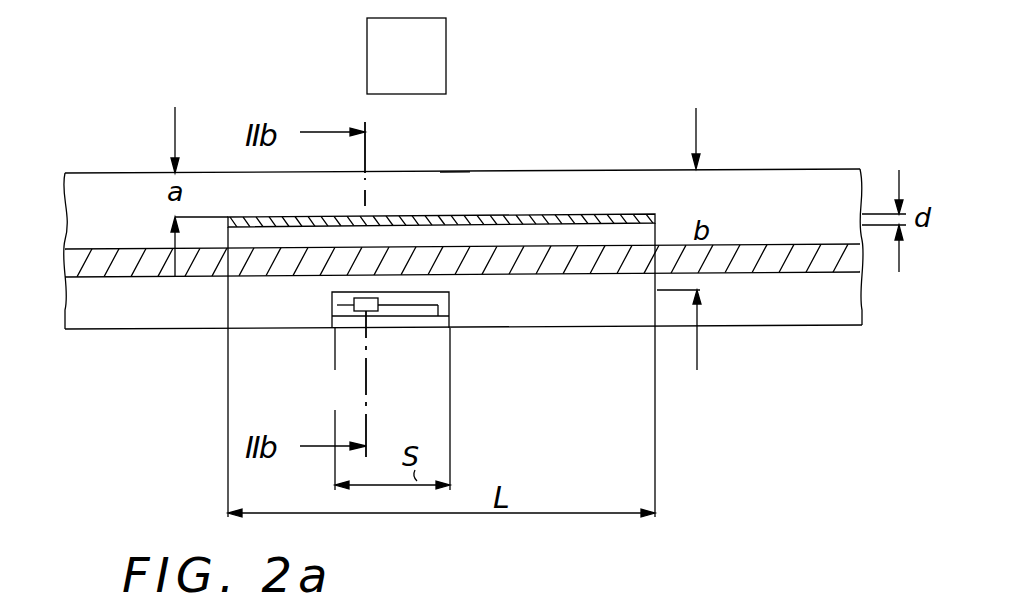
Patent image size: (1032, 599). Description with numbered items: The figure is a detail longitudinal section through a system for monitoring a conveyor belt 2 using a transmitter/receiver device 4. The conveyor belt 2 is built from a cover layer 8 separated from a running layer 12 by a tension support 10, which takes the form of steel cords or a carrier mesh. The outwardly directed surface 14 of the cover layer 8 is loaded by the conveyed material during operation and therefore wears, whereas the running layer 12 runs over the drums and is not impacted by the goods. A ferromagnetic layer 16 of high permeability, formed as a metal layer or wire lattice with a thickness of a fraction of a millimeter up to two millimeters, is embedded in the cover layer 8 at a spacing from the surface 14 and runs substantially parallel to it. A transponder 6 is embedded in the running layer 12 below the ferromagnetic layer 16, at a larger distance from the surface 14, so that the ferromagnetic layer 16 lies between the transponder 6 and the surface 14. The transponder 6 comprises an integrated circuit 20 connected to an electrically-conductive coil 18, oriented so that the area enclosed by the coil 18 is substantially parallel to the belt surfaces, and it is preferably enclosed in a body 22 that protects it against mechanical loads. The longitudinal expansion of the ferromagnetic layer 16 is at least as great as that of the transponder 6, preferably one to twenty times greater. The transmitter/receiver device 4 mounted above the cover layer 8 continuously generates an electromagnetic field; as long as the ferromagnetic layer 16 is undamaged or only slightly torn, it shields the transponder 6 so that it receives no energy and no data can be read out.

The conveyor belt 2 is at (805, 202).
The transmitter/receiver device 4 is at (446, 60).
The transponder 6 is at (425, 310).
The cover layer 8 is at (716, 196).
The tension support 10 is at (155, 265).
The running layer 12 is at (773, 304).
The surface 14 is at (448, 172).
The ferromagnetic layer 16 is at (552, 215).
The electrically-conductive coil 18 is at (342, 317).
The integrated circuit 20 is at (362, 312).
The body 22 is at (437, 320).